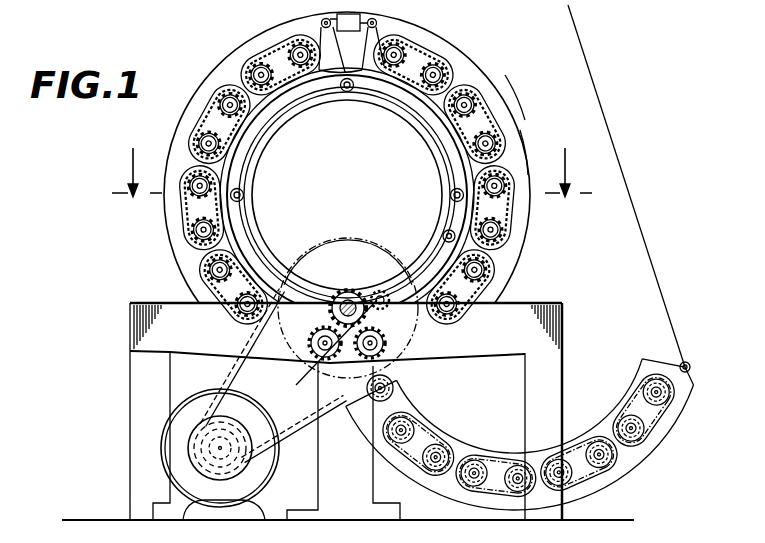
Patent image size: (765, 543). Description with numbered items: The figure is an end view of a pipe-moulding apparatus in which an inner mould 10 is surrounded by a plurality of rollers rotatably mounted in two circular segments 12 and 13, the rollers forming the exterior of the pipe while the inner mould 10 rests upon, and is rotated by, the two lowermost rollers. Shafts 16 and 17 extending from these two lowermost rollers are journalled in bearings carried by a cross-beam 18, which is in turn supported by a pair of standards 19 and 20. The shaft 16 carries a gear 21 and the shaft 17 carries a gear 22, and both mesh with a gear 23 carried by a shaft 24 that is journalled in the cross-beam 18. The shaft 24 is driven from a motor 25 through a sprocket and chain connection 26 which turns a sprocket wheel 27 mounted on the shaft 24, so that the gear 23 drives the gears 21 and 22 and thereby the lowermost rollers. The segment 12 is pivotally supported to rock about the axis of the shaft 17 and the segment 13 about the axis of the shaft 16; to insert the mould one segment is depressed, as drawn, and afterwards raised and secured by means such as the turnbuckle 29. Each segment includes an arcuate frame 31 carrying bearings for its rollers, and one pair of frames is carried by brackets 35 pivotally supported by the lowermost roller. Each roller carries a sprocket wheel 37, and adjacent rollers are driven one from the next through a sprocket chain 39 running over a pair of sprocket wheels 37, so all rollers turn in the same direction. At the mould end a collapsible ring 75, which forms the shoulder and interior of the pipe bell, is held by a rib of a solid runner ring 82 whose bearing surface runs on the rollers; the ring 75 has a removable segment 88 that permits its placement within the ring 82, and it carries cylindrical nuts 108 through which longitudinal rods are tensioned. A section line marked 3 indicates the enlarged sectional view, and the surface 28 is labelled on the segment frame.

The inner mould 10 is at (393, 124).
The circular segment 12 is at (509, 85).
The circular segment 13 is at (211, 68).
The shaft 16 is at (314, 372).
The shaft 17 is at (380, 325).
The cross-beam 18 is at (533, 312).
The standard 19 is at (137, 383).
The standard 20 is at (554, 383).
The gear 21 is at (335, 402).
The gear 22 is at (378, 292).
The gear 23 is at (347, 300).
The shaft 24 is at (350, 300).
The motor 25 is at (175, 455).
The sprocket and chain connection 26 is at (233, 369).
The sprocket wheel 27 is at (317, 240).
The frame surface 28 is at (516, 158).
The turnbuckle 29 is at (378, 20).
The arcuate frame 31 is at (512, 111).
The bracket 35 is at (428, 368).
The sprocket wheel 37 is at (473, 98).
The sprocket chain 39 is at (447, 72).
The collapsible ring 75 is at (400, 90).
The solid runner ring 82 is at (353, 62).
The removable segment 88 is at (410, 290).
The cylindrical nut 108 is at (450, 195).
The section line 3- 3 is at (352, 186).